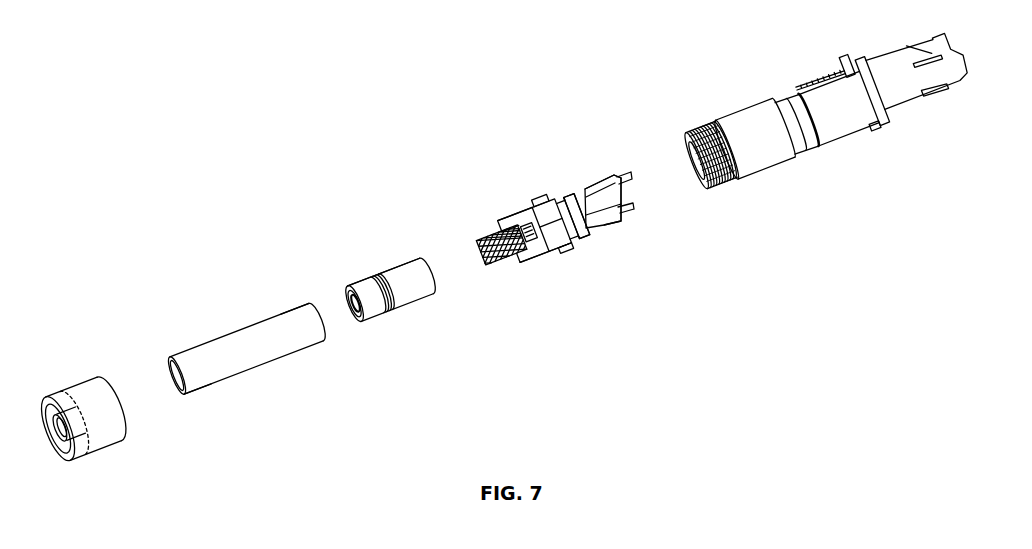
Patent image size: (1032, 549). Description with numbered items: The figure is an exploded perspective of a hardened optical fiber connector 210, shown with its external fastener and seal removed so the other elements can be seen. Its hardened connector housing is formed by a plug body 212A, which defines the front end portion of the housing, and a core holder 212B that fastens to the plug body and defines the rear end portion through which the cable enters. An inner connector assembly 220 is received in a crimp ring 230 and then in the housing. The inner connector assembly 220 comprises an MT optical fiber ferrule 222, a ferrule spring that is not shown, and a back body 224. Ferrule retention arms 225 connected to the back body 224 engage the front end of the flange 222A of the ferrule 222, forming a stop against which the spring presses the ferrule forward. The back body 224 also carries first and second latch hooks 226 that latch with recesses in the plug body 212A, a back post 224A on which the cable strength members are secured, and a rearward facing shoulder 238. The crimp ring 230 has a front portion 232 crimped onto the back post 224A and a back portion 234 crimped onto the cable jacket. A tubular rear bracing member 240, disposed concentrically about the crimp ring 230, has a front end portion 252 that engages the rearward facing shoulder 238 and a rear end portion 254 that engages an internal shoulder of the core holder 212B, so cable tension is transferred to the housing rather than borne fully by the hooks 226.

The hardened optical fiber connector 210 is at (420, 162).
The plug body 212A is at (798, 185).
The core holder 212B is at (134, 431).
The inner connector assembly 220 is at (554, 286).
The optical fiber ferrule 222 is at (604, 186).
The flange 222A is at (606, 218).
The back body 224 is at (534, 263).
The back post 224A is at (490, 228).
The ferrule retention arms 225 is at (572, 210).
The latch hooks 226 is at (547, 199).
The crimp ring 230 is at (410, 331).
The front portion 232 is at (415, 267).
The back portion 234 is at (362, 288).
The rearward facing shoulder 238 is at (547, 212).
The rear bracing member 240 is at (212, 322).
The front end portion 252 is at (308, 302).
The rear end portion 254 is at (187, 392).